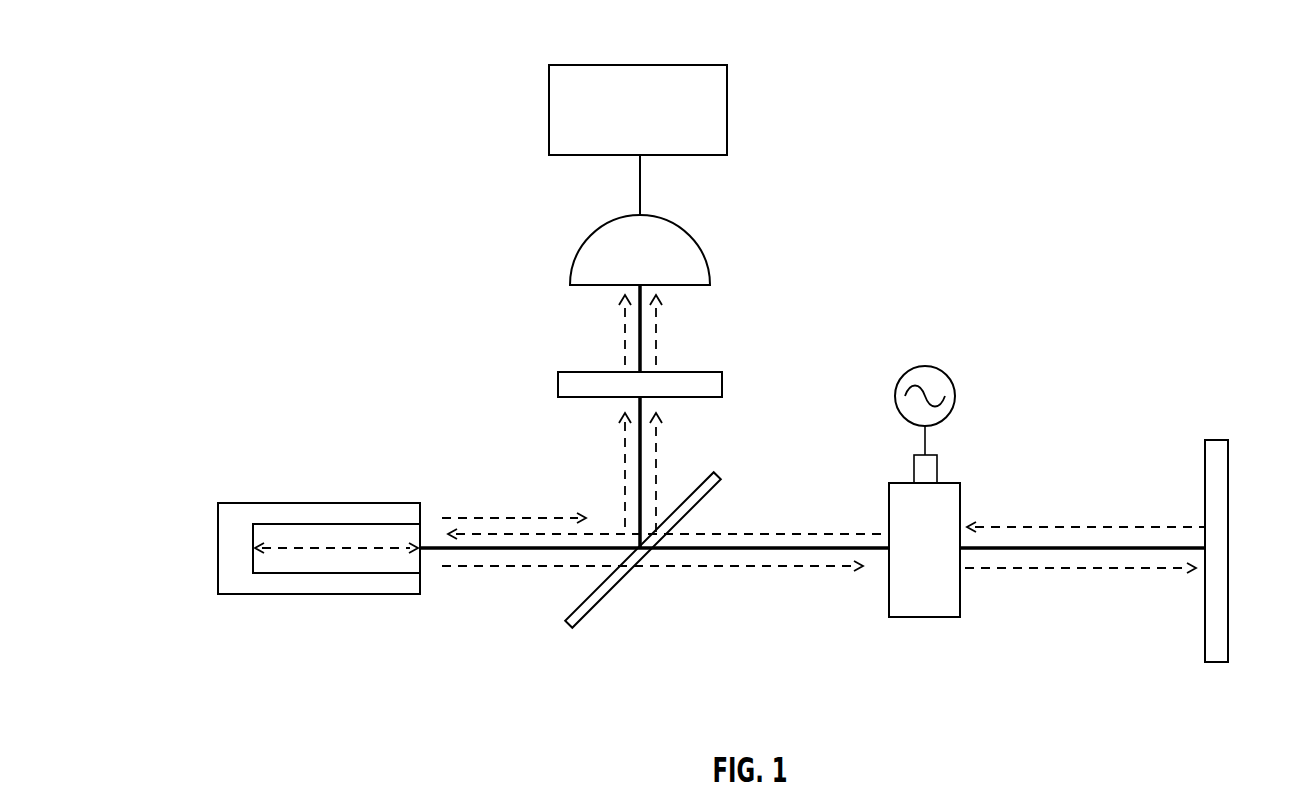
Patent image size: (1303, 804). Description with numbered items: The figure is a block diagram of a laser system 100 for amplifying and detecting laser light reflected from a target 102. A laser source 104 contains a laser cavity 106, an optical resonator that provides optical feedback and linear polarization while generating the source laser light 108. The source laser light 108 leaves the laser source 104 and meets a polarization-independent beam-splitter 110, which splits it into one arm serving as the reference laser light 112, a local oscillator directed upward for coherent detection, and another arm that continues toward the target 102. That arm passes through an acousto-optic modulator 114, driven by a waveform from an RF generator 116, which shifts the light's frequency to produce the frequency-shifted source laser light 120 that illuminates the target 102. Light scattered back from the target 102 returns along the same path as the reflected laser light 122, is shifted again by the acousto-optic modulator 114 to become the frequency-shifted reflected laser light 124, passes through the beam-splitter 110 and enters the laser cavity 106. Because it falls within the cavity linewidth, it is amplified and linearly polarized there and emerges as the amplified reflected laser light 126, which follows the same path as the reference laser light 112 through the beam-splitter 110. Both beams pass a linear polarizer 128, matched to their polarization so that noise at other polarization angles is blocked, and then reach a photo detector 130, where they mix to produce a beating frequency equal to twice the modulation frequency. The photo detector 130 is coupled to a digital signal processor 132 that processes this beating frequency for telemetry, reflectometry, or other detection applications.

The laser system 100 is at (1134, 103).
The target 102 is at (1228, 465).
The laser source 104 is at (243, 594).
The laser cavity 106 is at (386, 573).
The source laser light 108 is at (473, 567).
The beam-splitter 110 is at (600, 607).
The reference laser light 112 is at (622, 334).
The acousto-optic modulator 114 is at (889, 596).
The RF generator 116 is at (955, 396).
The frequency-shifted source laser light 120 is at (1040, 569).
The reflected laser light 122 is at (1110, 526).
The frequency-shifted reflected laser light 124 is at (727, 532).
The amplified reflected laser light 126 is at (658, 334).
The linear polarizer 128 is at (558, 385).
The photo detector 130 is at (581, 247).
The digital signal processor 132 is at (727, 110).